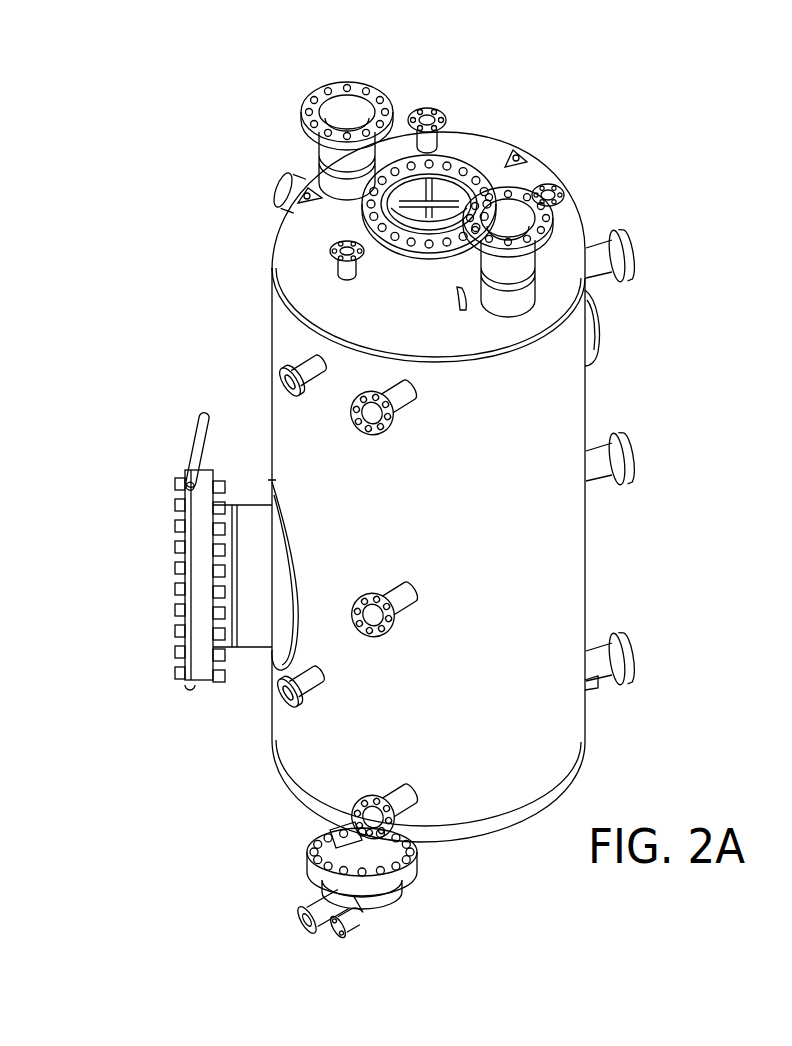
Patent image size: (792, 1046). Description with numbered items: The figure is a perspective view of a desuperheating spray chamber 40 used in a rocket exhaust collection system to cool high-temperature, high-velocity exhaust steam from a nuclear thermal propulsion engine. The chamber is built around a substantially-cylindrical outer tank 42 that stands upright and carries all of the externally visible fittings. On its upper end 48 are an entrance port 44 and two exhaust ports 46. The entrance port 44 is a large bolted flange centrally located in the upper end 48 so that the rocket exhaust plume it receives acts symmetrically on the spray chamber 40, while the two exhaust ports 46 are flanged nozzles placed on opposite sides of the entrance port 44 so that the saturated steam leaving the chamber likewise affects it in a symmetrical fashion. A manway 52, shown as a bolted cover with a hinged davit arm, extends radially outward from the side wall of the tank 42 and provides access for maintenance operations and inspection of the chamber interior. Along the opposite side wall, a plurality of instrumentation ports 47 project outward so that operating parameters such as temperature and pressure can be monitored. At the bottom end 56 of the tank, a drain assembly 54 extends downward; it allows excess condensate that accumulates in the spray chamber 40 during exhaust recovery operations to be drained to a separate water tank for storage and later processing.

The desuperheating spray chamber 40 is at (399, 503).
The outer tank 42 is at (603, 557).
The entrance port 44 is at (470, 148).
The exhaust ports 46 is at (292, 94).
The instrumentation ports 47 is at (645, 258).
The upper end 48 is at (308, 228).
The manway 52 is at (160, 488).
The drain assembly 54 is at (315, 947).
The bottom end 56 is at (472, 860).